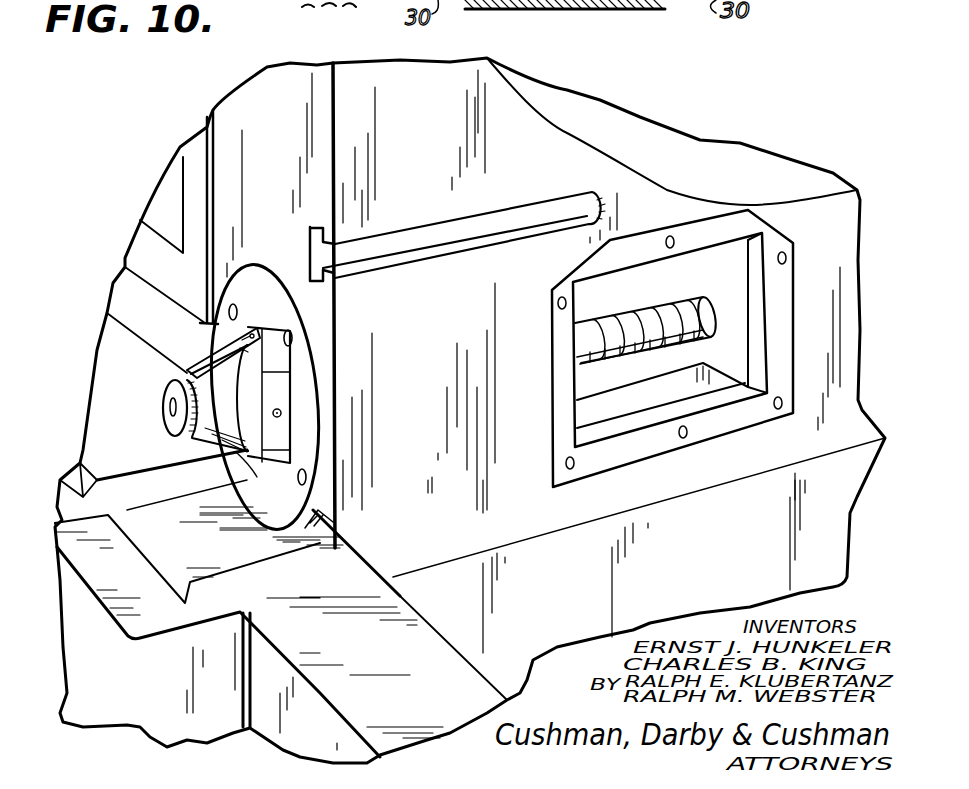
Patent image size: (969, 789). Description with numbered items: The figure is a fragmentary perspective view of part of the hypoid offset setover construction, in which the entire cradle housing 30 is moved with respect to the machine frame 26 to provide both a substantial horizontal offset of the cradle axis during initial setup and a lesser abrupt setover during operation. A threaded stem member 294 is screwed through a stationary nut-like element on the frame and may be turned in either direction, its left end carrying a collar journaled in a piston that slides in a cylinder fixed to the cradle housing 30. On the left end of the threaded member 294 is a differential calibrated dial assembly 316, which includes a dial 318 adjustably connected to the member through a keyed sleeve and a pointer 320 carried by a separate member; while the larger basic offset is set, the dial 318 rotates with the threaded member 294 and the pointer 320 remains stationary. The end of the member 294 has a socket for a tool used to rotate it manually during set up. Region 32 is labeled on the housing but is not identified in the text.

The machine frame 26 is at (708, 581).
The cradle housing 30 is at (478, 319).
The top wall of housing 32 is at (745, 146).
The threaded stem member 294 is at (650, 310).
The differential calibrated dial assembly 316 is at (168, 378).
The dial 318 is at (197, 462).
The pointer 320 is at (213, 357).